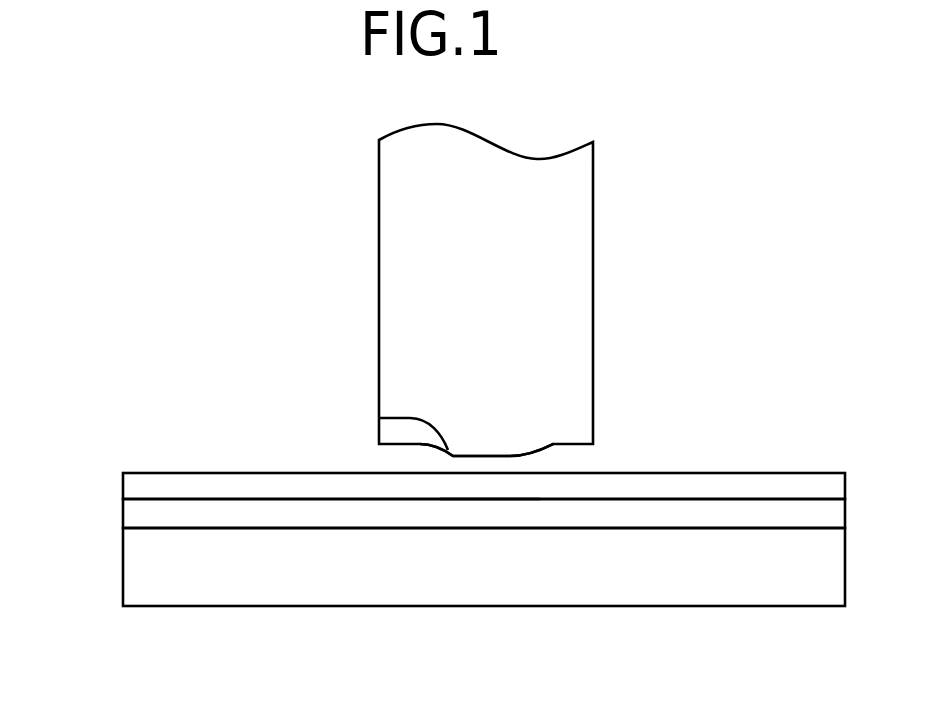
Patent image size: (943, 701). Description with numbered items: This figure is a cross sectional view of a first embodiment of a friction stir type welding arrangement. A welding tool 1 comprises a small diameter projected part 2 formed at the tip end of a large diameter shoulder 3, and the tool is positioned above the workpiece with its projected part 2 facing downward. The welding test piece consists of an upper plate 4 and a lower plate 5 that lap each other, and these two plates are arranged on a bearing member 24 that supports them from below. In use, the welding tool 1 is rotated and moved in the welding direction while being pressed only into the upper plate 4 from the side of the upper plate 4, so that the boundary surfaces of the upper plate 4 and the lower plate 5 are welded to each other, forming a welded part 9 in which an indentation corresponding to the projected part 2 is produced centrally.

The welding tool 1 is at (593, 247).
The small diameter projected part 2 is at (379, 418).
The large diameter shoulder 3 is at (593, 415).
The upper plate 4 is at (192, 473).
The lower plate 5 is at (123, 512).
The welded part 9 is at (483, 500).
The bearing member 24 is at (123, 563).